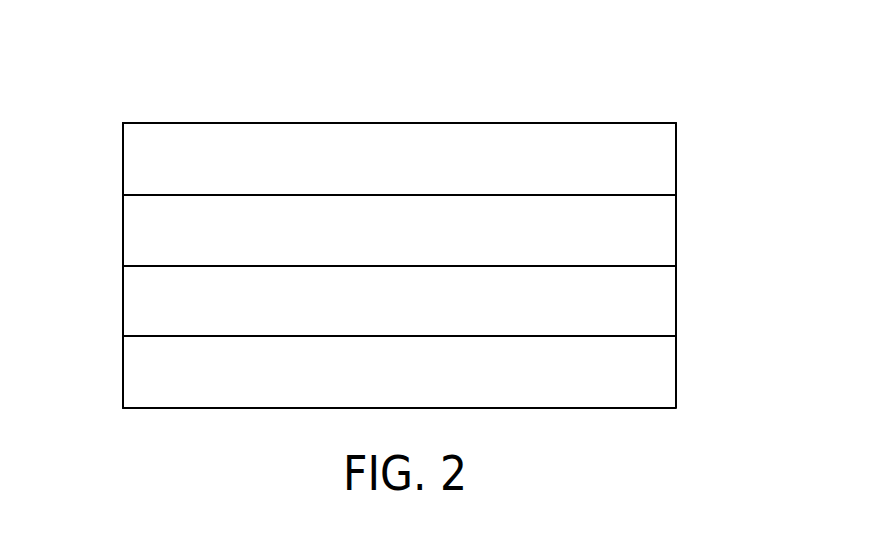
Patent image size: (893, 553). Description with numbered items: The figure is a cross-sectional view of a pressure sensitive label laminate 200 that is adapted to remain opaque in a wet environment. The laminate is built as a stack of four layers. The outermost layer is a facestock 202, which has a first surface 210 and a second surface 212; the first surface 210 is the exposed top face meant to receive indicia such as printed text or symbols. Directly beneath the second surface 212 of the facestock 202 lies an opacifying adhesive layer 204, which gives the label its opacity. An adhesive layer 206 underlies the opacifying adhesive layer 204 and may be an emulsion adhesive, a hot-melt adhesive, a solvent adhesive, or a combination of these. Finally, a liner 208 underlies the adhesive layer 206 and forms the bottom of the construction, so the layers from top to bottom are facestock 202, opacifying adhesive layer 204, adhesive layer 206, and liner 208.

The label laminate 200 is at (157, 95).
The facestock 202 is at (676, 152).
The opacifying adhesive layer 204 is at (676, 235).
The adhesive layer 206 is at (676, 305).
The liner 208 is at (676, 374).
The first surface 210 is at (123, 123).
The second surface 212 is at (123, 195).